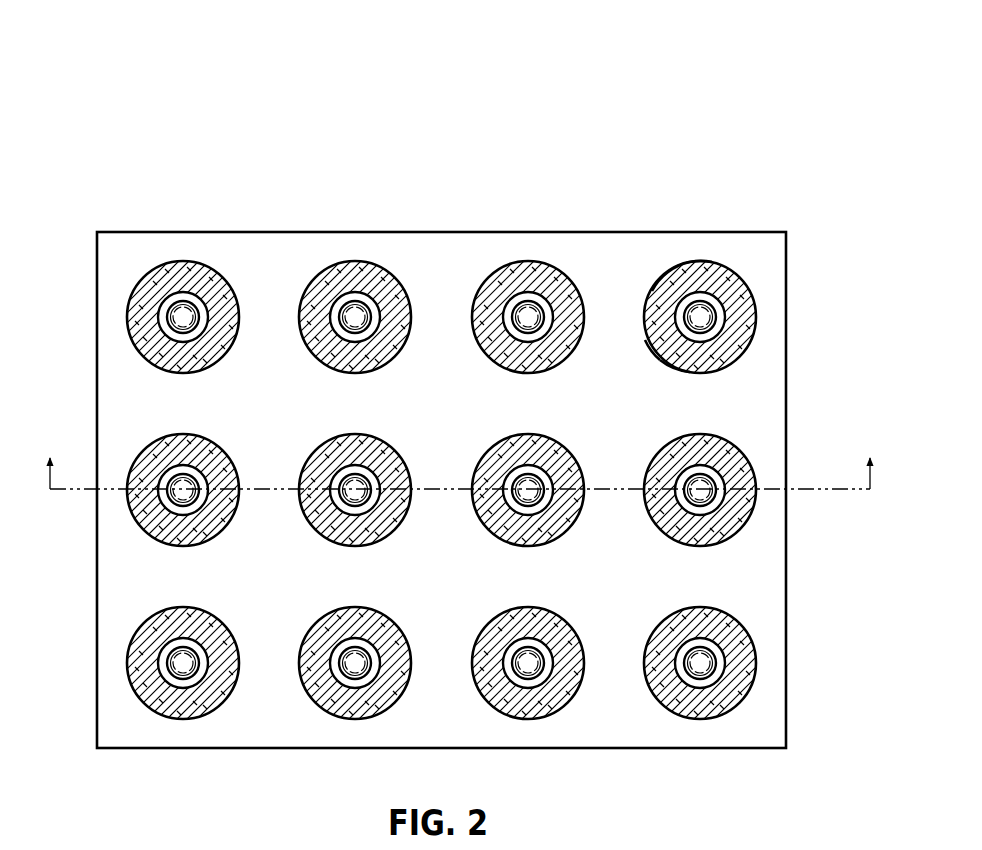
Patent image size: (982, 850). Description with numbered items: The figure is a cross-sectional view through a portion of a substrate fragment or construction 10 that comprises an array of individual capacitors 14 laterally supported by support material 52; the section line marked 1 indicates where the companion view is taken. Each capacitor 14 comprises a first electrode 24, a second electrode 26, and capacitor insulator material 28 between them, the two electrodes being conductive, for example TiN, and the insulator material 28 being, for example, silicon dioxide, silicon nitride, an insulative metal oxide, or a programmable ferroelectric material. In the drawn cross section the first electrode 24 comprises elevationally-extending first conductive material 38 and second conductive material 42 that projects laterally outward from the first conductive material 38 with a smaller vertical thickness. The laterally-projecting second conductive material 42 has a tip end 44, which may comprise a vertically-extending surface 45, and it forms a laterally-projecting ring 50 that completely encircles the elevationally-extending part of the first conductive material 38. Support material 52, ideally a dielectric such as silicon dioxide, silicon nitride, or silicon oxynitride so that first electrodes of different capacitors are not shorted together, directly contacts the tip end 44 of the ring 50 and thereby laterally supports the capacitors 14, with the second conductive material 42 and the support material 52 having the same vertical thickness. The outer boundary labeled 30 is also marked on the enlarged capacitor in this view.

The substrate fragment or construction 10 is at (785, 83).
The capacitor 14 is at (476, 490).
The first electrode 24 is at (706, 317).
The second electrode 26 is at (703, 333).
The capacitor insulator material 28 is at (718, 325).
The outer surface 30 is at (748, 282).
The first conductive material 38 is at (687, 287).
The second conductive material 42 is at (652, 290).
The tip end 44 is at (646, 344).
The vertically-extending surface 45 is at (670, 367).
The laterally-projecting ring 50 is at (697, 262).
The support material 52 is at (476, 595).
The section line 1- 1 is at (458, 452).